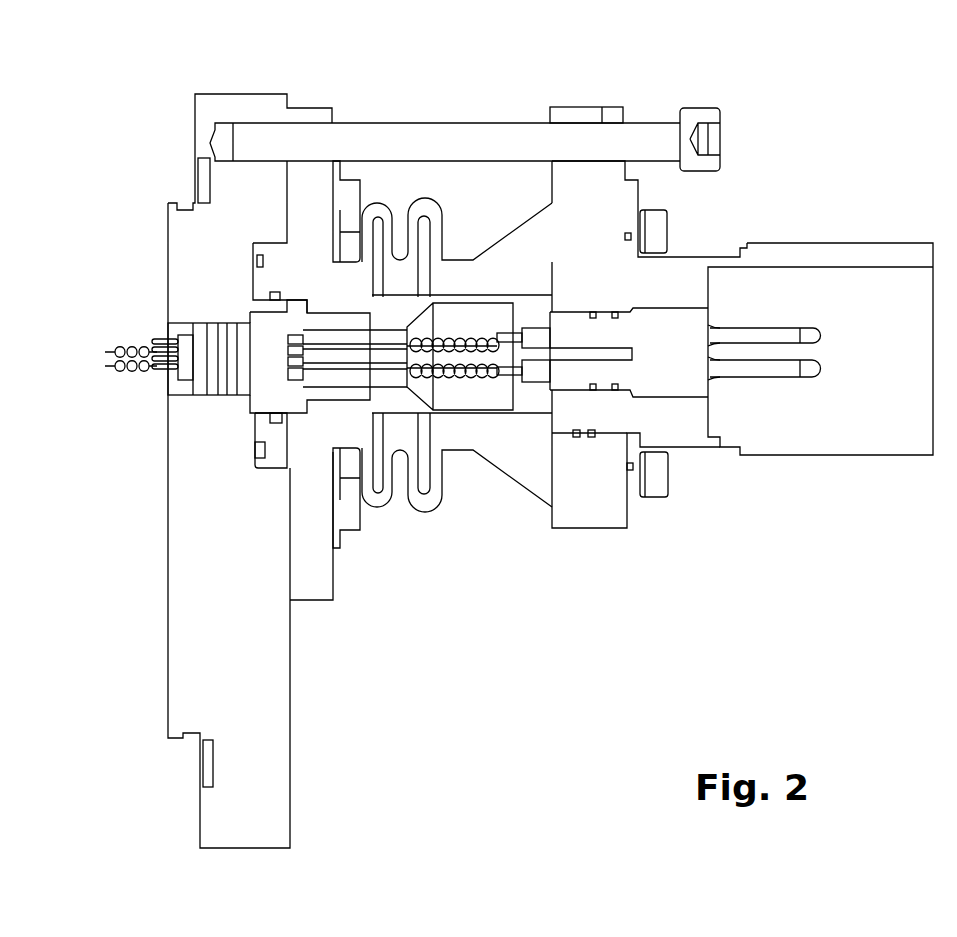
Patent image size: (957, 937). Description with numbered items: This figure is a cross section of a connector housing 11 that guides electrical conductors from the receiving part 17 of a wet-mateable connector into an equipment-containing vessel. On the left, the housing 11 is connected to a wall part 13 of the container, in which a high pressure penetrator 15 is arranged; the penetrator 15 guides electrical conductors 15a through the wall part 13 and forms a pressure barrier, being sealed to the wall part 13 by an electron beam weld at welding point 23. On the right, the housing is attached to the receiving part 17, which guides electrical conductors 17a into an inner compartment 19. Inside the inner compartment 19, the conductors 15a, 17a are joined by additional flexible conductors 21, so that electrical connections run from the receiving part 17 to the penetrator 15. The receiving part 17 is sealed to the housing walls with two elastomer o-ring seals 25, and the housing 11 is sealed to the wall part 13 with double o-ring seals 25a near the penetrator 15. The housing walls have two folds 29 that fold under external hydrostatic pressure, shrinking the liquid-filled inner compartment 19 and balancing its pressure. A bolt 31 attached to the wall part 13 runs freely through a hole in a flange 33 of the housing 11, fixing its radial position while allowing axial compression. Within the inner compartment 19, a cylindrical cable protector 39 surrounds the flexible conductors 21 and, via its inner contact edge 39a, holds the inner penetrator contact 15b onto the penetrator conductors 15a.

The connector housing 11 is at (552, 475).
The wall part 13 is at (253, 703).
The high pressure penetrator 15 is at (272, 378).
The electrical conductors 15a is at (163, 377).
The inner penetrator contact 15b is at (357, 337).
The receiving part 17 is at (830, 252).
The electrical conductors 17a is at (505, 376).
The inner compartment 19 is at (490, 331).
The flexible conductors 21 is at (438, 335).
The welding point 23 is at (267, 321).
The elastomer o-ring seals 25 is at (577, 437).
The double elastomer o-ring seals 25a is at (258, 262).
The folds 29 is at (375, 203).
The bolt 31 is at (440, 145).
The flange 33 is at (580, 112).
The cable protector 39 is at (393, 318).
The inner contact edge 39a is at (393, 405).